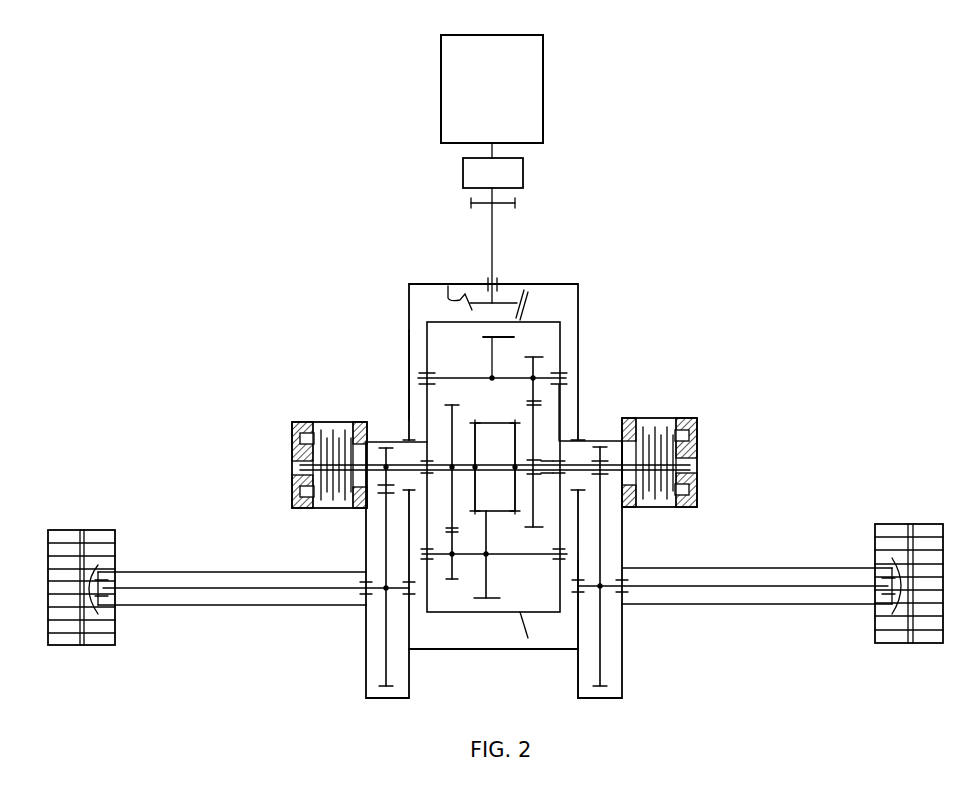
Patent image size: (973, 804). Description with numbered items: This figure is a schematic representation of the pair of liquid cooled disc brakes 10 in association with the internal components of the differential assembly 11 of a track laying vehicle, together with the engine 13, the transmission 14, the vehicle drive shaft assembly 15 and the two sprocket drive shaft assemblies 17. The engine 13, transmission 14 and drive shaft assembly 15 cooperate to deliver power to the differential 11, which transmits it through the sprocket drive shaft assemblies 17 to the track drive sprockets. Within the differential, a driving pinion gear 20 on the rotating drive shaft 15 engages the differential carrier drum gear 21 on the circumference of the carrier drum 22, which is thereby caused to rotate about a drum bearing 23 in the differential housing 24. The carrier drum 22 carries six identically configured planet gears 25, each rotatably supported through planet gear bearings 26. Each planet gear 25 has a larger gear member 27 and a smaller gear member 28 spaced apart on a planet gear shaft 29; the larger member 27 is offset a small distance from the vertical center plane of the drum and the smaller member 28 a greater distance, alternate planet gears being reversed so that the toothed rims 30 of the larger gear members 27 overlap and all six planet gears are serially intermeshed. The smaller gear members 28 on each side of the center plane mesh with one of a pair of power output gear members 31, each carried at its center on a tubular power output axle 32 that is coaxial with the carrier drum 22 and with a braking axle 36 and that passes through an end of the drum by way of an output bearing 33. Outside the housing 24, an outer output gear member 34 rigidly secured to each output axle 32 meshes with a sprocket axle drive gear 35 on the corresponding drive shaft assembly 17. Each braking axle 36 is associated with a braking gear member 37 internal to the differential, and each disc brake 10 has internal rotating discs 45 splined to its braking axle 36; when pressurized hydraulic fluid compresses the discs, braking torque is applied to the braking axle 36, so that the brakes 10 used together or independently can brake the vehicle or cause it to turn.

The liquid cooled disc brake 10 is at (290, 451).
The differential assembly 11 is at (582, 284).
The engine 13 is at (540, 107).
The transmission 14 is at (518, 178).
The vehicle drive shaft assembly 15 is at (494, 252).
The sprocket drive shaft assembly 17 is at (183, 572).
The driving pinion gear 20 is at (454, 287).
The differential carrier drum gear 21 is at (522, 304).
The carrier drum 22 is at (424, 340).
The drum bearing 23 is at (408, 442).
The differential housing 24 is at (408, 372).
The planet gear 25 is at (512, 356).
The planet gear bearing 26 is at (561, 382).
The larger gear member 27 is at (492, 358).
The smaller gear member 28 is at (542, 367).
The planet gear shaft 29 is at (478, 380).
The toothed rim 30 is at (483, 338).
The power output gear member 31 is at (532, 436).
The tubular power output axle 32 is at (545, 462).
The output bearing 33 is at (548, 476).
The outer output gear member 34 is at (601, 474).
The sprocket axle drive gear 35 is at (602, 660).
The braking axle 36 is at (368, 492).
The braking gear member 37 is at (493, 455).
The rotating disc 45 is at (698, 492).